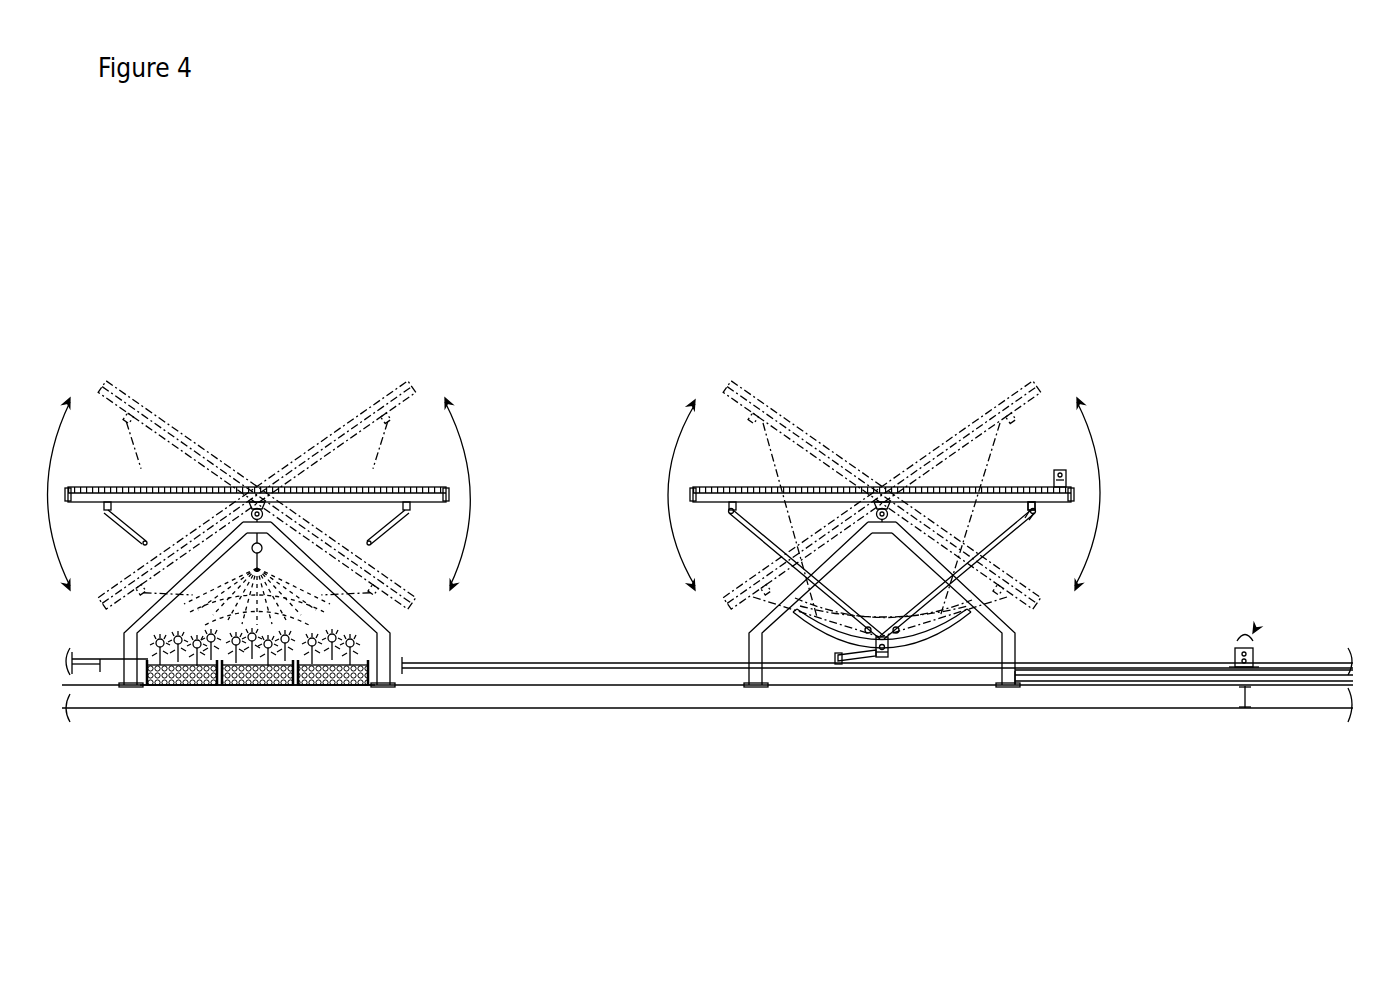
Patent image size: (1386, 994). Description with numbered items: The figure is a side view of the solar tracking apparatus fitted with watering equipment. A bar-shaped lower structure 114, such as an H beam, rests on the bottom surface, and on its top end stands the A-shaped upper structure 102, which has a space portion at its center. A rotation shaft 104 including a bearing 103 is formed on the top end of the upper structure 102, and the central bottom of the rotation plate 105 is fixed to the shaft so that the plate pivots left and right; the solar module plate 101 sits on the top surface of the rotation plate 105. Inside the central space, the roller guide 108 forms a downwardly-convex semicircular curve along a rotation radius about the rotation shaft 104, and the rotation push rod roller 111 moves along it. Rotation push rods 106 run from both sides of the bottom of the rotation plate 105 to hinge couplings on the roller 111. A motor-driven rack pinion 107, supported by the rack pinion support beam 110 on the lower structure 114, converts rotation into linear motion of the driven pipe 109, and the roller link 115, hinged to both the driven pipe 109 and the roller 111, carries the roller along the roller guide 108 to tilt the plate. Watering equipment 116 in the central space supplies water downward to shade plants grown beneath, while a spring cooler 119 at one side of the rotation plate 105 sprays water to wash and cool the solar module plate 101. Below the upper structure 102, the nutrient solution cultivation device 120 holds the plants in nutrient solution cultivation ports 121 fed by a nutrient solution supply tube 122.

The solar module plate 101 is at (405, 486).
The upper structure 102 is at (390, 638).
The bearing 103 is at (282, 500).
The rotation shaft 104 is at (262, 487).
The rotation plate 105 is at (406, 506).
The rotation push rods 106 is at (764, 538).
The rack pinion 107 is at (1233, 650).
The roller guide 108 is at (932, 642).
The driven pipe 109 is at (1063, 662).
The rack pinion support beam 110 is at (1152, 677).
The rotation push rod roller 111 is at (889, 654).
The lower structure 114 is at (1218, 710).
The roller link 115 is at (856, 666).
The watering equipment 116 is at (257, 547).
The spring cooler 119 is at (1060, 468).
The nutrient solution cultivation device 120 is at (170, 724).
The nutrient solution cultivation ports 121 is at (130, 667).
The nutrient solution supply tube 122 is at (110, 656).